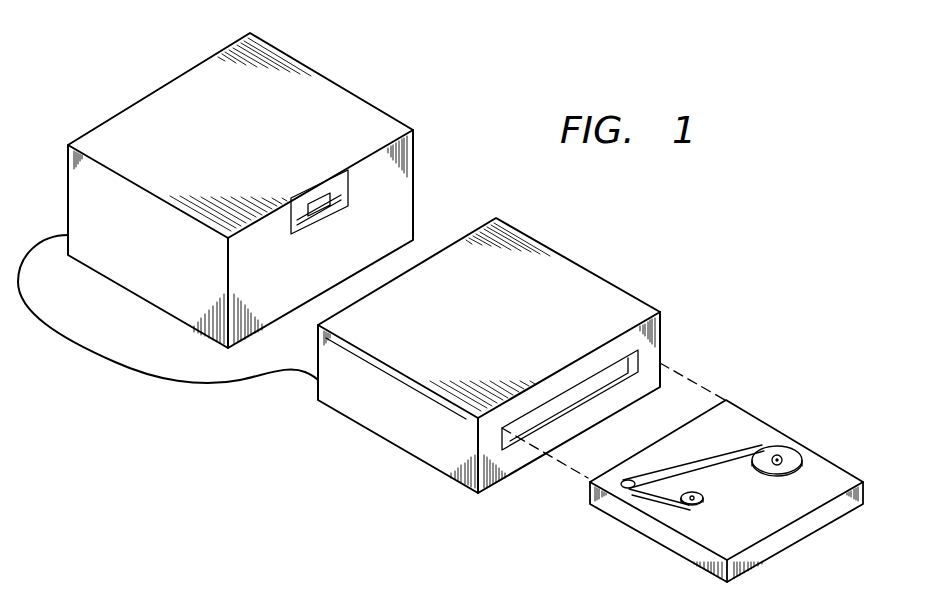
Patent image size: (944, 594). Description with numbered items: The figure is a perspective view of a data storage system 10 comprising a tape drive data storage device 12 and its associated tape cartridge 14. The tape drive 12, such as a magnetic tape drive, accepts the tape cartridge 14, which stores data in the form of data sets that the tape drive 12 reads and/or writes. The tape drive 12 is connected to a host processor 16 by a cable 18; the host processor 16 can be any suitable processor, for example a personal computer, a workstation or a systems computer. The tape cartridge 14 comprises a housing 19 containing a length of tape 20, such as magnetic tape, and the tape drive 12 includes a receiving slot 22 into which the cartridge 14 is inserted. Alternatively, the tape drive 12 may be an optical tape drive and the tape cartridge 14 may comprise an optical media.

The data storage system 10 is at (240, 178).
The tape drive data storage device 12 is at (521, 335).
The tape cartridge 14 is at (726, 470).
The host processor 16 is at (139, 108).
The cable 18 is at (196, 390).
The housing 19 is at (790, 538).
The tape 20 is at (707, 465).
The receiving slot 22 is at (592, 390).